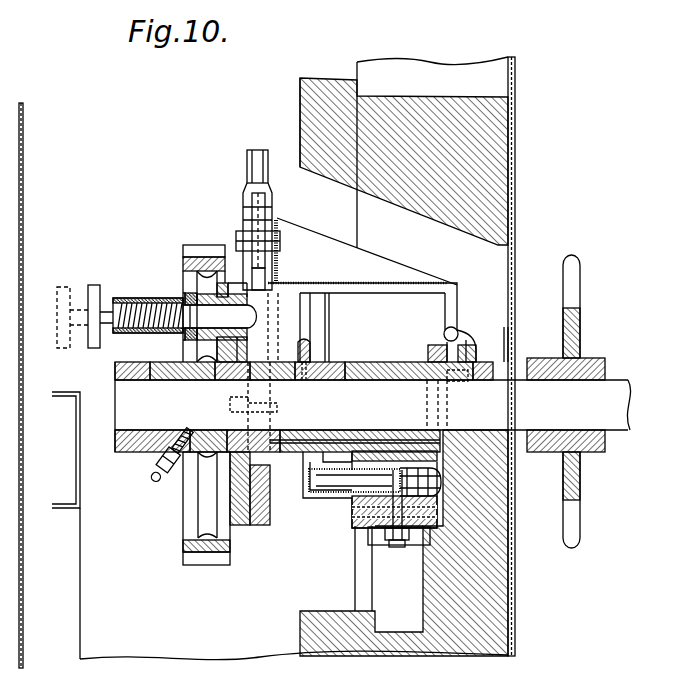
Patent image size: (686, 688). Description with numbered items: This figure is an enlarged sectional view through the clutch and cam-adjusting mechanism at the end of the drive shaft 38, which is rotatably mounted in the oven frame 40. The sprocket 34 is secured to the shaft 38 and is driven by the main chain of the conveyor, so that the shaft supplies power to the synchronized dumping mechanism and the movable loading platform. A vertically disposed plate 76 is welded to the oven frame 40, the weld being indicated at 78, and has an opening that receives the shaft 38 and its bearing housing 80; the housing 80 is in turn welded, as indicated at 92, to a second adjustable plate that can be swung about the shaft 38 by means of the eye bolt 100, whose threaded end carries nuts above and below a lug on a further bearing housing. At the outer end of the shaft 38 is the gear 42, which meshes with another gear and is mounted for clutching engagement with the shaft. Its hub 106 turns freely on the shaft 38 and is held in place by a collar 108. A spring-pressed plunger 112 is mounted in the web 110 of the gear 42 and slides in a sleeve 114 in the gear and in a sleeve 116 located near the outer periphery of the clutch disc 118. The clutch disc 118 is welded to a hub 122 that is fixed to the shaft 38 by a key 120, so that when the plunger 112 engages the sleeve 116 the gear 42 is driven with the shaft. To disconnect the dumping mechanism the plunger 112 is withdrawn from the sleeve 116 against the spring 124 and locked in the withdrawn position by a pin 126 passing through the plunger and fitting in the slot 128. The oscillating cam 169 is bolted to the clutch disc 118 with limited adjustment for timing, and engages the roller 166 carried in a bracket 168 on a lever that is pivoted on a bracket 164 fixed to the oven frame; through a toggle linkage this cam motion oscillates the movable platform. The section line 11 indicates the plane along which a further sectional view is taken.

The section line 11 is at (339, 223).
The sprocket 34 is at (582, 512).
The shaft 38 is at (616, 390).
The oven frame 40 is at (350, 518).
The gear 42 is at (188, 554).
The vertically disposed plate 76 is at (450, 480).
The weld 78 is at (443, 498).
The bearing housing 80 is at (344, 360).
The weld 92 is at (432, 358).
The eye bolt 100 is at (452, 467).
The hub 106 is at (162, 447).
The collar 108 is at (115, 372).
The web 110 is at (205, 268).
The spring-pressed plunger 112 is at (205, 288).
The sleeve 114 is at (215, 335).
The sleeve 116 is at (262, 316).
The clutch disc 118 is at (255, 346).
The key 120 is at (230, 405).
The hub 122 is at (280, 430).
The spring 124 is at (113, 298).
The pin 126 is at (186, 332).
The slot 128 is at (152, 298).
The bracket 164 is at (420, 290).
The roller 166 is at (250, 197).
The bracket 168 is at (256, 150).
The oscillating cam 169 is at (259, 525).